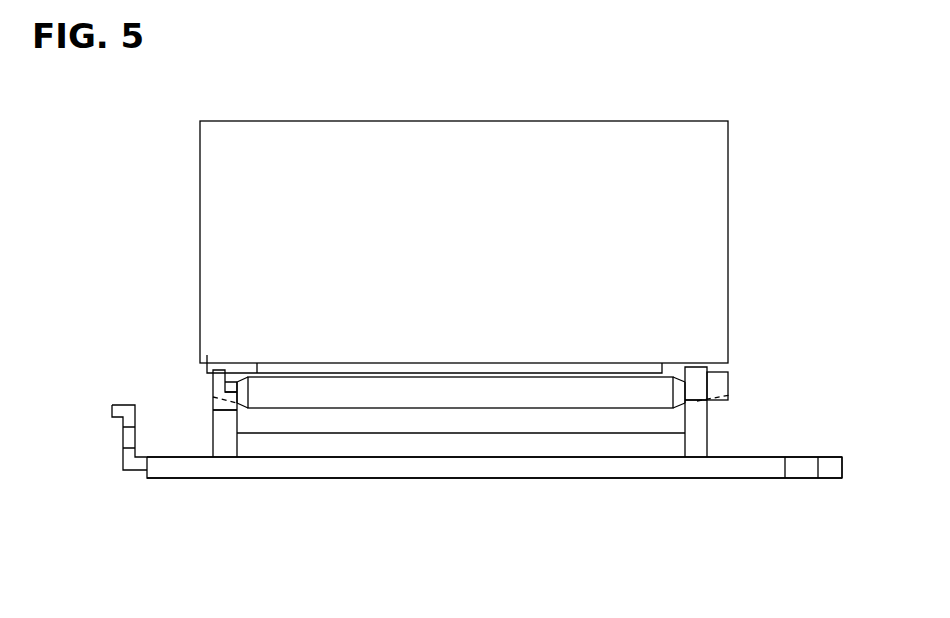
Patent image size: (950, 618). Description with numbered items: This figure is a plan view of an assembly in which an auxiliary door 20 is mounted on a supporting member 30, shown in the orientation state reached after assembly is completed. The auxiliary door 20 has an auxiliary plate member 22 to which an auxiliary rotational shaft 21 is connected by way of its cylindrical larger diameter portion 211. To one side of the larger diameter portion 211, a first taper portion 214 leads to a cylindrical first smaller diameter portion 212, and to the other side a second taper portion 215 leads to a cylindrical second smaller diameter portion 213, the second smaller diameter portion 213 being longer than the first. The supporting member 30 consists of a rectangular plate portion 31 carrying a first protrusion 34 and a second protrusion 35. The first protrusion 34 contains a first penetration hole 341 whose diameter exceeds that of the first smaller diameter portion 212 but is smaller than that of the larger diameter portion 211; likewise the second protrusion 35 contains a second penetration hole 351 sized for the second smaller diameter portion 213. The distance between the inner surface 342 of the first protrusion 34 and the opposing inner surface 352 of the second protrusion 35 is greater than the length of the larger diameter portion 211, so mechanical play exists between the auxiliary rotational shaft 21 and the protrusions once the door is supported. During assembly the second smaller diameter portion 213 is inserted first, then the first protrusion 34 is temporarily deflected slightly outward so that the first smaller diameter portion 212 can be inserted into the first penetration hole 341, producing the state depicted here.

The auxiliary door 20 is at (703, 85).
The auxiliary plate member 22 is at (440, 150).
The auxiliary rotational shaft 21 is at (573, 367).
The larger diameter portion 211 is at (503, 380).
The first smaller diameter portion 212 is at (206, 362).
The second smaller diameter portion 213 is at (718, 383).
The first taper portion 214 is at (222, 382).
The second taper portion 215 is at (700, 366).
The supporting member 30 is at (712, 493).
The plate portion 31 is at (460, 470).
The first protrusion 34 is at (220, 438).
The first penetration hole 341 is at (213, 397).
The inner surface of the first protrusion 342 is at (213, 410).
The second protrusion 35 is at (697, 430).
The second penetration hole 351 is at (730, 396).
The inner surface of the second protrusion 352 is at (687, 407).